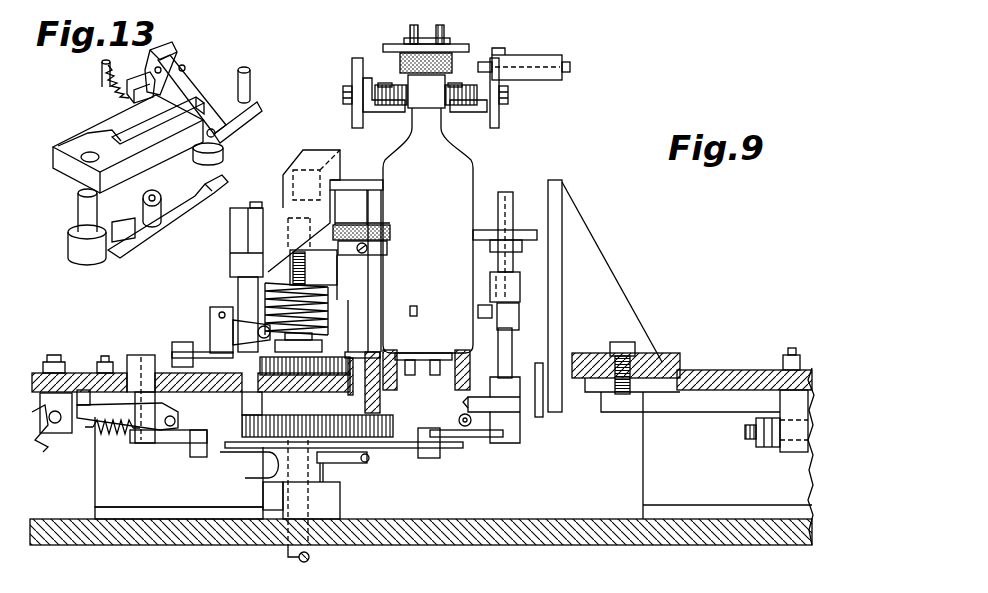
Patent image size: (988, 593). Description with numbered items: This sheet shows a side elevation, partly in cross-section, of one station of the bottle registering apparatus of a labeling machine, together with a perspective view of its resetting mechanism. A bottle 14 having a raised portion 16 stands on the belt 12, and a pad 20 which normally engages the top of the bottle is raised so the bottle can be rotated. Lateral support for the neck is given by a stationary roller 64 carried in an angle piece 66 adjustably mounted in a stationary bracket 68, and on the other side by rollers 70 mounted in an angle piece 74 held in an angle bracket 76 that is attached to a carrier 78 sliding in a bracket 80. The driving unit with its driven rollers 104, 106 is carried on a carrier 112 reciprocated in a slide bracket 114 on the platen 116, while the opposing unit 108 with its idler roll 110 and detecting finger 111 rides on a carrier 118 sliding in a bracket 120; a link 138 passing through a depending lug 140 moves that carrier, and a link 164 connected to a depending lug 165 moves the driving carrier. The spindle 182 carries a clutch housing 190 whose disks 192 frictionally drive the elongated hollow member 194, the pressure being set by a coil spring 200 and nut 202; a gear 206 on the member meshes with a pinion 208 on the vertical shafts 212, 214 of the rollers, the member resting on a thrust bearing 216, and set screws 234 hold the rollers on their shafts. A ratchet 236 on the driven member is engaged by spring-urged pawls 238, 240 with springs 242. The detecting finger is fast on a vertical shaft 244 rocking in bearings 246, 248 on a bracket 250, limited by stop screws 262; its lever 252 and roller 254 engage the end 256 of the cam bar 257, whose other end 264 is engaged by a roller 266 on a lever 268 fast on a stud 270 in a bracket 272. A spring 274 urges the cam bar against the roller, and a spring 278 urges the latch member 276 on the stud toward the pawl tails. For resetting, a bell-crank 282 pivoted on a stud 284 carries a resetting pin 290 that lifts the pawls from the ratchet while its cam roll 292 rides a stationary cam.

In FIG. 9, the belt 12 is at (420, 356).
In FIG. 9, the bottle 14 is at (428, 214).
In FIG. 9, the raised portion 16 is at (418, 305).
In FIG. 9, the pad 20 is at (447, 52).
In FIG. 9, the stationary roller 64 is at (386, 84).
In FIG. 9, the angle piece 66 is at (375, 112).
In FIG. 9, the stationary bracket 68 is at (352, 76).
In FIG. 9, the roller 70 is at (458, 84).
In FIG. 9, the angle piece 74 is at (478, 112).
In FIG. 9, the angle bracket 76 is at (500, 115).
In FIG. 9, the carrier 78 is at (570, 67).
In FIG. 9, the bracket 80 is at (552, 57).
In FIG. 9, the driven roller 104 is at (388, 222).
In FIG. 9, the driven roller 106 is at (392, 232).
In FIG. 9, the opposing unit 108 is at (693, 302).
In FIG. 9, the idler roll 110 is at (515, 230).
In FIG. 9, the detecting finger 111 is at (478, 306).
In FIG. 9, the carrier 112 is at (84, 372).
In FIG. 9, the slide bracket 114 is at (168, 508).
In FIG. 9, the platen 116 is at (515, 540).
In FIG. 9, the carrier 118 is at (722, 378).
In FIG. 9, the bracket 120 is at (707, 456).
In FIG. 9, the link 138 is at (745, 433).
In FIG. 9, the depending lug 140 is at (793, 454).
In FIG. 9, the link 164 is at (48, 450).
In FIG. 9, the depending lug 165 is at (67, 433).
In FIG. 9, the spindle 182 is at (312, 553).
In FIG. 9, the clutch housing 190 is at (327, 267).
In FIG. 9, the disks 192 is at (232, 272).
In FIG. 9, the elongated hollow member 194 is at (240, 296).
In FIG. 9, the coil spring 200 is at (333, 298).
In FIG. 9, the nut 202 is at (338, 333).
In FIG. 9, the gear 206 is at (250, 410).
In FIG. 9, the pinion 208 is at (470, 400).
In FIG. 9, the vertical shaft 212 is at (283, 172).
In FIG. 9, the vertical shaft 214 is at (293, 185).
In FIG. 9, the thrust bearing 216 is at (375, 470).
In FIG. 9, the set screw 234 is at (390, 247).
In FIG. 9, the ratchet 236 is at (262, 366).
In FIG. 13, the pawl 238 is at (172, 50).
In FIG. 13, the pawl 240 is at (132, 94).
In FIG. 13, the spring 242 is at (104, 84).
In FIG. 9, the vertical shaft 244 is at (503, 362).
In FIG. 9, the bearing 246 is at (520, 273).
In FIG. 9, the bearing 248 is at (527, 403).
In FIG. 9, the bracket 250 is at (655, 262).
In FIG. 9, the lever 252 is at (477, 437).
In FIG. 9, the roller 254 is at (433, 452).
In FIG. 9, the end of cam bar 256 is at (402, 448).
In FIG. 9, the cam bar 257 is at (249, 466).
In FIG. 9, the stop screws 262 is at (459, 420).
In FIG. 13, the other end of cam bar 264 is at (182, 197).
In FIG. 9, the other end of cam bar 264 is at (170, 445).
In FIG. 13, the roller 266 is at (157, 226).
In FIG. 9, the roller 266 is at (200, 458).
In FIG. 13, the lever 268 is at (118, 252).
In FIG. 13, the stud 270 is at (80, 205).
In FIG. 9, the stud 270 is at (141, 355).
In FIG. 9, the bracket 272 is at (122, 420).
In FIG. 9, the spring 274 is at (342, 484).
In FIG. 13, the latch member 276 is at (125, 140).
In FIG. 9, the spring 278 is at (100, 440).
In FIG. 13, the bell-crank 282 is at (238, 122).
In FIG. 9, the bell-crank 282 is at (213, 341).
In FIG. 13, the stud 284 is at (262, 60).
In FIG. 13, the resetting pin 290 is at (170, 110).
In FIG. 13, the cam roll 292 is at (225, 155).